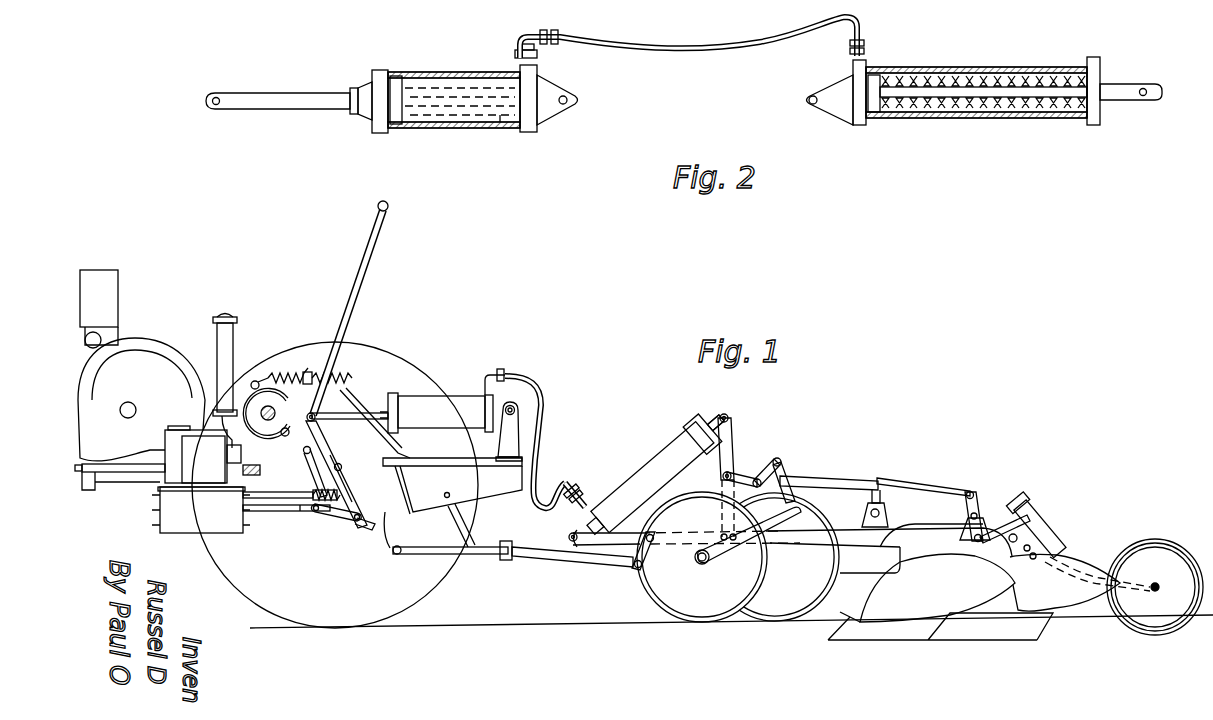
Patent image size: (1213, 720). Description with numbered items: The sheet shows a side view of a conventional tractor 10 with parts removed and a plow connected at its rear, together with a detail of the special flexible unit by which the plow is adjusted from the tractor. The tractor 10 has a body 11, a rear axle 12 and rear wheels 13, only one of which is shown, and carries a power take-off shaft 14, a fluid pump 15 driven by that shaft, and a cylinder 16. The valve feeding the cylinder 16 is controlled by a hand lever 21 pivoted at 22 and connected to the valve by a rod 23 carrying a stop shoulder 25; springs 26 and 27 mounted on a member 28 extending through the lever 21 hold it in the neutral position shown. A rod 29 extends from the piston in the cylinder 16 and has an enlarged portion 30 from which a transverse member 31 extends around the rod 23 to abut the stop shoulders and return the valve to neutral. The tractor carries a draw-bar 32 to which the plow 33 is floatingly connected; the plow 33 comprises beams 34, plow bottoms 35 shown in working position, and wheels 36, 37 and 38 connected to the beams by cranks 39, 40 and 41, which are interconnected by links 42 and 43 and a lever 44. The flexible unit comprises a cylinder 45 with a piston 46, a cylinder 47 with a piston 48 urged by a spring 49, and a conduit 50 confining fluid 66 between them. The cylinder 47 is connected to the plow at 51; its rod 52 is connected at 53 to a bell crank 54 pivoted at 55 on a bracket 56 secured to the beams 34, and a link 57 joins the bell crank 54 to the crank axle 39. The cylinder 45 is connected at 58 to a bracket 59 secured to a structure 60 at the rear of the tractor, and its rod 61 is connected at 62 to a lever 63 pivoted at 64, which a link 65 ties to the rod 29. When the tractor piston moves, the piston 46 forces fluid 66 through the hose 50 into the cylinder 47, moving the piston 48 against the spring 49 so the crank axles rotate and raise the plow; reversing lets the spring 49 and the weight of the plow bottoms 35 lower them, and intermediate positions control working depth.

In FIG. 1, the tractor 10 is at (162, 300).
In FIG. 1, the body 11 is at (104, 270).
In FIG. 1, the rear axle 12 is at (238, 380).
In FIG. 1, the rear wheels 13 is at (392, 358).
In FIG. 1, the power take-off shaft 14 is at (97, 478).
In FIG. 1, the fluid pump 15 is at (165, 446).
In FIG. 1, the cylinder 16 is at (228, 522).
In FIG. 1, the hand lever 21 is at (357, 262).
In FIG. 1, the pivot 22 is at (304, 451).
In FIG. 1, the rod 23 is at (302, 511).
In FIG. 1, the stop shoulder 25 is at (340, 495).
In FIG. 1, the spring 26 is at (300, 395).
In FIG. 1, the spring 27 is at (295, 372).
In FIG. 1, the member 28 is at (262, 380).
In FIG. 1, the rod 29 is at (276, 512).
In FIG. 1, the enlarged portion 30 is at (362, 518).
In FIG. 1, the member 31 is at (268, 492).
In FIG. 1, the draw-bar 32 is at (483, 556).
In FIG. 1, the plow 33 is at (808, 463).
In FIG. 1, the beams 34 is at (900, 537).
In FIG. 1, the plow bottoms 35 is at (892, 640).
In FIG. 1, the wheel 36 is at (702, 620).
In FIG. 1, the wheel 37 is at (778, 620).
In FIG. 1, the wheel 38 is at (1160, 545).
In FIG. 1, the crank 39 is at (765, 525).
In FIG. 1, the crank 40 is at (850, 528).
In FIG. 1, the crank 41 is at (1048, 536).
In FIG. 1, the link 42 is at (870, 481).
In FIG. 1, the link 43 is at (1003, 524).
In FIG. 1, the lever 44 is at (977, 492).
In FIG. 2, the cylinder 45 is at (448, 80).
In FIG. 1, the cylinder 45 is at (445, 395).
In FIG. 2, the piston 46 is at (397, 83).
In FIG. 2, the cylinder 47 is at (1050, 72).
In FIG. 1, the cylinder 47 is at (638, 480).
In FIG. 2, the piston 48 is at (875, 76).
In FIG. 2, the spring 49 is at (1000, 72).
In FIG. 2, the conduit 50 is at (694, 50).
In FIG. 1, the conduit 50 is at (541, 455).
In FIG. 1, the connection 51 is at (568, 535).
In FIG. 2, the rod 52 is at (1125, 98).
In FIG. 1, the rod 52 is at (717, 420).
In FIG. 1, the connection 53 is at (730, 415).
In FIG. 1, the bell crank 54 is at (731, 440).
In FIG. 1, the pivot 55 is at (727, 476).
In FIG. 1, the bracket 56 is at (722, 488).
In FIG. 1, the link 57 is at (778, 460).
In FIG. 1, the connection 58 is at (511, 406).
In FIG. 1, the bracket 59 is at (520, 428).
In FIG. 1, the structure 60 is at (497, 490).
In FIG. 2, the rod 61 is at (335, 102).
In FIG. 1, the rod 61 is at (372, 413).
In FIG. 1, the connection 62 is at (320, 420).
In FIG. 1, the lever 63 is at (333, 455).
In FIG. 1, the pivot 64 is at (342, 468).
In FIG. 1, the link 65 is at (358, 524).
In FIG. 2, the fluid 66 is at (500, 122).